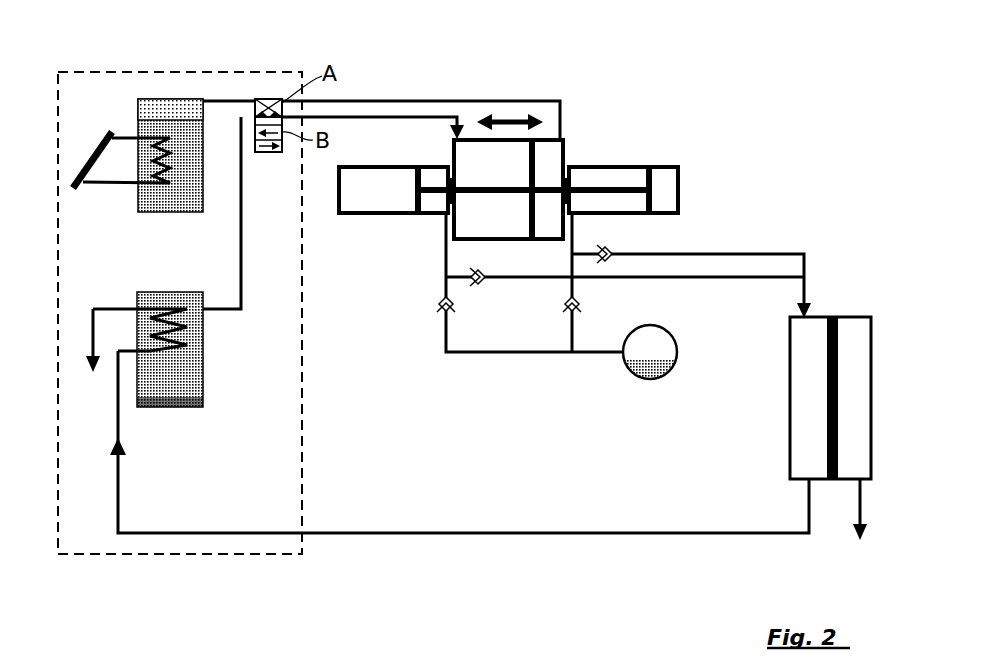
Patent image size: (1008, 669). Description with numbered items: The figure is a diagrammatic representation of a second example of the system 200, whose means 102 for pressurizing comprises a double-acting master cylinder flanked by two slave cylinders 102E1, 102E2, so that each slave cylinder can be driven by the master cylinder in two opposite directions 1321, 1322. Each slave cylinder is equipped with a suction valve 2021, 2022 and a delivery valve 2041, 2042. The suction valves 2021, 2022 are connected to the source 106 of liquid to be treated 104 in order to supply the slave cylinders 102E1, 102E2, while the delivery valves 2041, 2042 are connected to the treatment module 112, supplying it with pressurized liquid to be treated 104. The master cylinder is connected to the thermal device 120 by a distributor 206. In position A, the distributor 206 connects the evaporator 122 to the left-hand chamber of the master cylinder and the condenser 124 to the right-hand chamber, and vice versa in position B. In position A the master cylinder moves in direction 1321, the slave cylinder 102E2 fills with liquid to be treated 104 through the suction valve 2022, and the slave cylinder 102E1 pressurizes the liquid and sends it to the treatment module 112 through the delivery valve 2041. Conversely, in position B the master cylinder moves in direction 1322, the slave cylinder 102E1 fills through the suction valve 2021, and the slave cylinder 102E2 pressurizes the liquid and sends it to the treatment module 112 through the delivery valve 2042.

The means for pressurizing 102 is at (511, 171).
The first slave cylinder 102E1 is at (396, 215).
The second slave cylinder 102E2 is at (608, 165).
The liquid to be treated 104 is at (650, 366).
The source of liquid to be treated 106 is at (678, 348).
The treatment module 112 is at (790, 387).
The thermal device 120 is at (213, 555).
The evaporator 122 is at (160, 110).
The condenser 124 is at (163, 300).
The first direction 1321 is at (540, 110).
The second direction 1322 is at (487, 112).
The system 200 is at (780, 126).
The suction valve 2021 is at (447, 312).
The suction valve 2022 is at (580, 304).
The delivery valve 2041 is at (470, 282).
The delivery valve 2042 is at (612, 252).
The distributor 206 is at (268, 86).